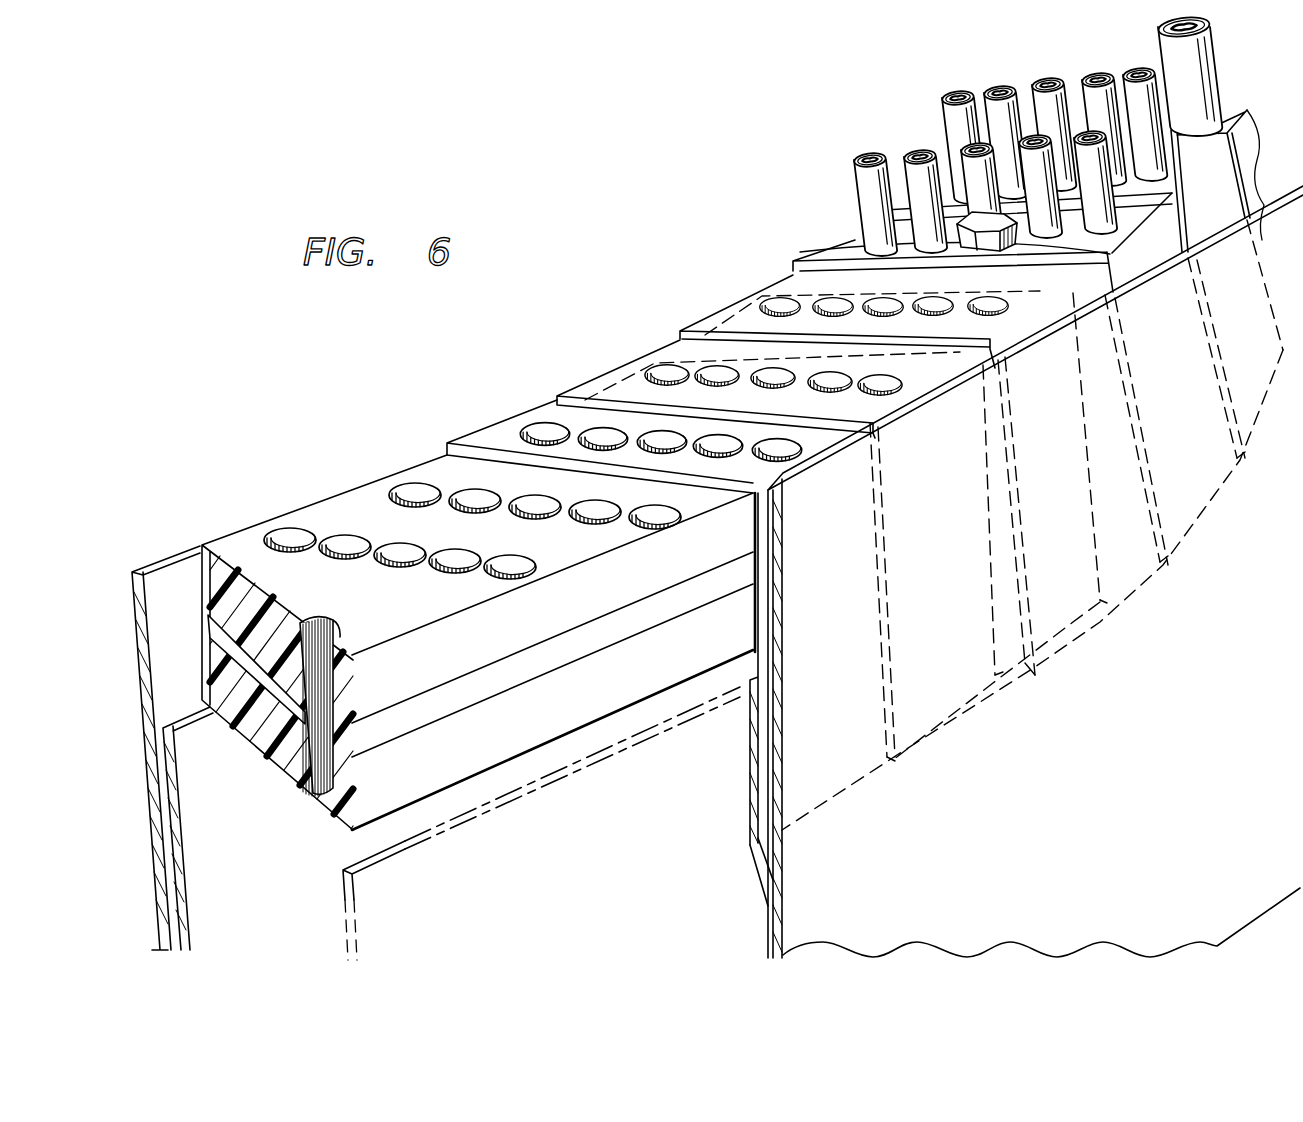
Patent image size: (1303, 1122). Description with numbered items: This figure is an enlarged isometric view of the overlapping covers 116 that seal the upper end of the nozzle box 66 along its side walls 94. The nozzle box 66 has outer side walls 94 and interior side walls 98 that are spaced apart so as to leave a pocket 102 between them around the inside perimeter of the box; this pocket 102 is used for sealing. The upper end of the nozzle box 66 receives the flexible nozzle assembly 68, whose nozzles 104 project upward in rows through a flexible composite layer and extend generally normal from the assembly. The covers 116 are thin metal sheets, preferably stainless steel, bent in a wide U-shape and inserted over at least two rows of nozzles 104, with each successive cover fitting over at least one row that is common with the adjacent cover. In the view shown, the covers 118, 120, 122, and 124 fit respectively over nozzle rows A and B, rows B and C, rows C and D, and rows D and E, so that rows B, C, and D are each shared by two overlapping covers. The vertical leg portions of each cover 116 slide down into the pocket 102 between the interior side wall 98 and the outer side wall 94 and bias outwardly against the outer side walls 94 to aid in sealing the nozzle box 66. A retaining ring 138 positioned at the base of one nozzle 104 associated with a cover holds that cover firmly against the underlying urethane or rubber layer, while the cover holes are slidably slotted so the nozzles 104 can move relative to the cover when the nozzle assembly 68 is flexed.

The nozzle box 66 is at (138, 622).
The flexible nozzle assembly 68 is at (692, 178).
The side walls 94 is at (150, 824).
The interior side walls 98 is at (180, 878).
The pocket 102 is at (760, 853).
The nozzles 104 is at (1208, 52).
The overlapping covers 116 is at (603, 437).
The cover 118 is at (741, 380).
The cover 120 is at (837, 320).
The cover 122 is at (800, 266).
The cover 124 is at (889, 238).
The retaining ring 138 is at (1112, 256).
The nozzle row A is at (542, 428).
The nozzle row B is at (668, 372).
The nozzle row C is at (775, 303).
The nozzle row D is at (858, 245).
The nozzle row E is at (1172, 168).